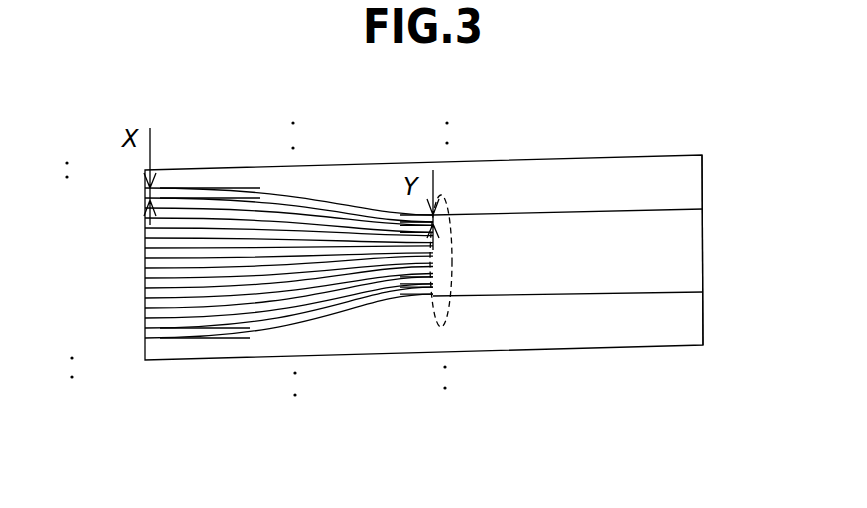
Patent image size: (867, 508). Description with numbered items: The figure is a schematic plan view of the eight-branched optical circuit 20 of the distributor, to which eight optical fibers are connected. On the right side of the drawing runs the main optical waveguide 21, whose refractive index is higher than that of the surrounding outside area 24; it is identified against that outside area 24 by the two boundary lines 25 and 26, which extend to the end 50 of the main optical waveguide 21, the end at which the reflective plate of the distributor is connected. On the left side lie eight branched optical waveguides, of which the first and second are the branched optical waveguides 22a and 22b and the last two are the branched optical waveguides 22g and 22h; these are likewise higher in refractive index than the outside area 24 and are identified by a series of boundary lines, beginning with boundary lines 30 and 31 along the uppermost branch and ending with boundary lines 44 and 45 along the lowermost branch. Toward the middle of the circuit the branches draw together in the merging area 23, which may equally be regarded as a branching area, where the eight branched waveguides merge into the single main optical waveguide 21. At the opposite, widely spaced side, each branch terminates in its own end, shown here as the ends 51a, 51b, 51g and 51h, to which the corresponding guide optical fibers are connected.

The optical circuit 20 is at (670, 153).
The main optical waveguide 21 is at (640, 273).
The merging area 23 is at (447, 317).
The outside area 24 is at (500, 183).
The boundary line 25 is at (575, 210).
The boundary line 26 is at (573, 295).
The boundary line 30 is at (205, 188).
The boundary line 31 is at (240, 200).
The boundary line 44 is at (238, 326).
The boundary line 45 is at (210, 341).
The end of the main optical waveguide 50 is at (703, 247).
The end of branched optical waveguide 51a is at (143, 196).
The end of branched optical waveguide 51b is at (143, 217).
The end of branched optical waveguide 51g is at (143, 318).
The end of branched optical waveguide 51h is at (143, 340).
The branched optical waveguide 22a is at (337, 208).
The branched optical waveguide 22b is at (367, 228).
The branched optical waveguide 22g is at (370, 295).
The branched optical waveguide 22h is at (332, 310).